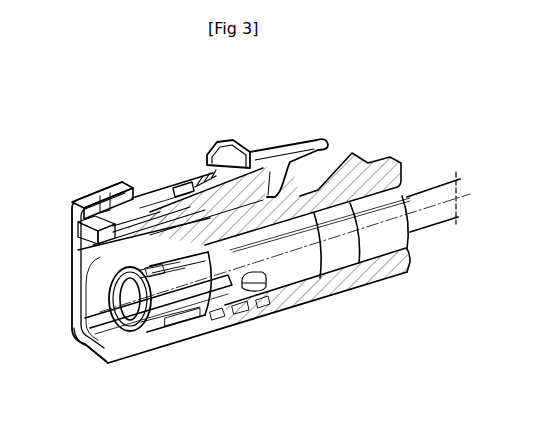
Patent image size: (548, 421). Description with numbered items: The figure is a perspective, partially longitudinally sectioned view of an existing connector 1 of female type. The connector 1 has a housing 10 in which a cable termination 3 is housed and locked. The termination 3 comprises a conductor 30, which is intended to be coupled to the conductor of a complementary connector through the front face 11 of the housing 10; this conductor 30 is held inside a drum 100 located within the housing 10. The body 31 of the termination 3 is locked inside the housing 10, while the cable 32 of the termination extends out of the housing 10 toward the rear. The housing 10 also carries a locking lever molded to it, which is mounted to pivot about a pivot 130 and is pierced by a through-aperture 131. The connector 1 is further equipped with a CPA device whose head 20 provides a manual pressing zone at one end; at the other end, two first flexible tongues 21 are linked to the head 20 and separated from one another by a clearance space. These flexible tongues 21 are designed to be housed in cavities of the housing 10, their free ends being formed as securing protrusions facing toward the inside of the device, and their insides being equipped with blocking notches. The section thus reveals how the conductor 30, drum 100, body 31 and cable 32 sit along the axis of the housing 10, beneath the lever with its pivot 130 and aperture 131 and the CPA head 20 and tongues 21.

The connector 1 is at (188, 119).
The cable termination 3 is at (367, 297).
The housing 10 is at (117, 344).
The front face 11 is at (92, 348).
The head 20 is at (282, 155).
The first flexible tongues 21 is at (74, 288).
The conductor 30 is at (197, 297).
The body 31 is at (277, 272).
The cable 32 is at (419, 198).
The drum 100 is at (142, 338).
The pivot 130 is at (177, 190).
The through-aperture 131 is at (110, 187).